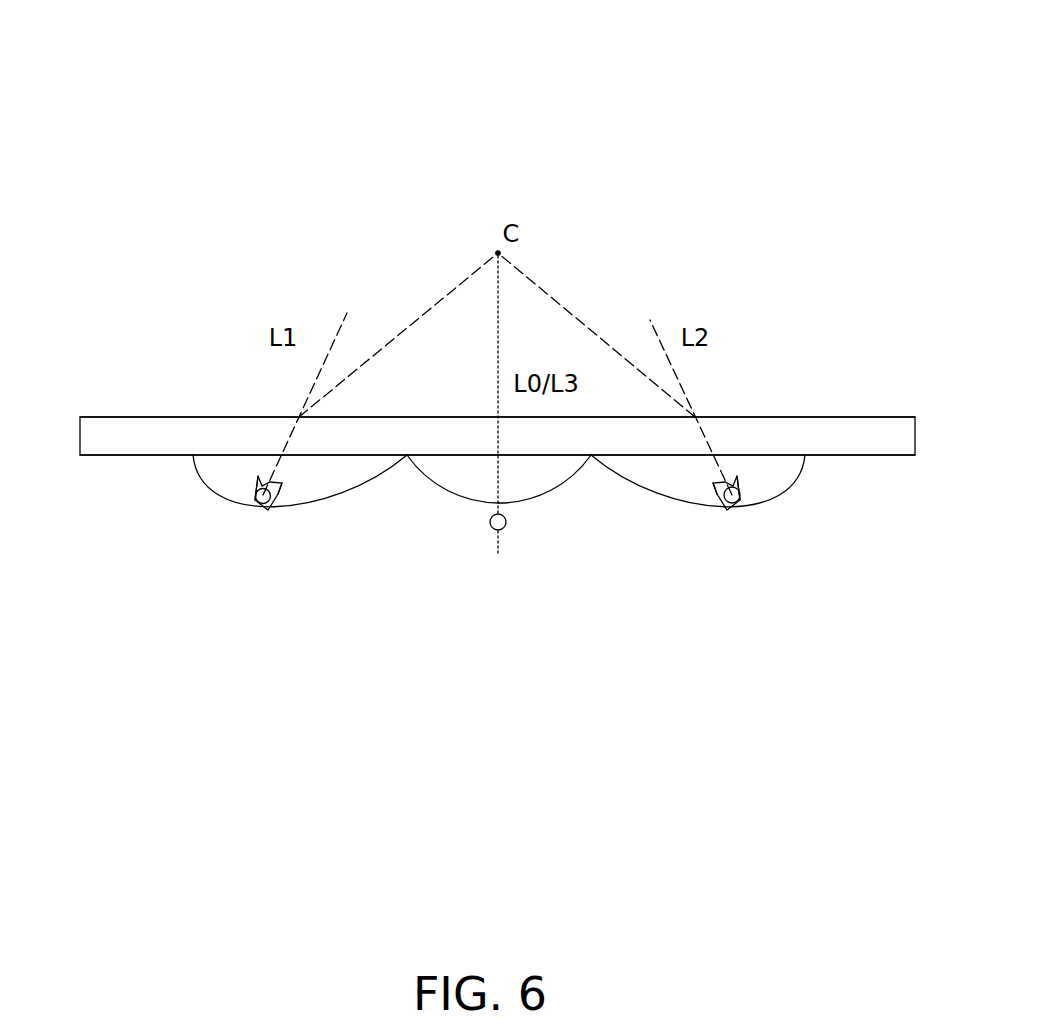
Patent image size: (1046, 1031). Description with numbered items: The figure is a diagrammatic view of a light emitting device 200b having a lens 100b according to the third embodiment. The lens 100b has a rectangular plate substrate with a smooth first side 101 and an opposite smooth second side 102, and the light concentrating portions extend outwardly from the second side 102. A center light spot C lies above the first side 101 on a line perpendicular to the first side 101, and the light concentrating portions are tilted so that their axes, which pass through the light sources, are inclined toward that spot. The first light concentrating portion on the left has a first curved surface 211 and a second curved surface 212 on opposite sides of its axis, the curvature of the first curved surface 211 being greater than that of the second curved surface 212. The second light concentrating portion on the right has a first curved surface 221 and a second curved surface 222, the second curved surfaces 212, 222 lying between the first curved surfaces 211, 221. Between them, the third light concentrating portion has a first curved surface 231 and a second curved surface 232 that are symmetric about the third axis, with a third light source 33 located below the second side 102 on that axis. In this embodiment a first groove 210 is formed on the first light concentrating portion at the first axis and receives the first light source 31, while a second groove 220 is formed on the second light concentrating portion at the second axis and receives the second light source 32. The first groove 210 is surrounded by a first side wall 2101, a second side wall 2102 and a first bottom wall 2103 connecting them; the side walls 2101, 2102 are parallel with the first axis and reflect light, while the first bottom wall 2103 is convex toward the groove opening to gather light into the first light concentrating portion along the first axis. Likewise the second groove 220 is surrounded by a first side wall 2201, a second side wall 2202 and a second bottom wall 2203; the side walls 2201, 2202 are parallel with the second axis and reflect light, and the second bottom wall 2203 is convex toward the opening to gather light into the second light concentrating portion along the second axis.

The light emitting device 200b is at (447, 65).
The lens 100b is at (842, 417).
The first side 101 is at (108, 417).
The second side 102 is at (103, 457).
The first groove 210 is at (245, 519).
The first curved surface 211 is at (233, 498).
The second curved surface 212 is at (385, 487).
The first side wall 2101 is at (258, 508).
The second side wall 2102 is at (280, 508).
The first bottom wall 2103 is at (262, 476).
The first light source 31 is at (262, 510).
The first curved surface 231 is at (458, 500).
The second curved surface 232 is at (537, 500).
The third light source 33 is at (503, 531).
The second groove 220 is at (757, 498).
The first curved surface 221 is at (773, 490).
The second curved surface 222 is at (642, 488).
The first side wall 2201 is at (747, 502).
The second side wall 2202 is at (724, 503).
The second bottom wall 2203 is at (732, 474).
The second light source 32 is at (743, 513).